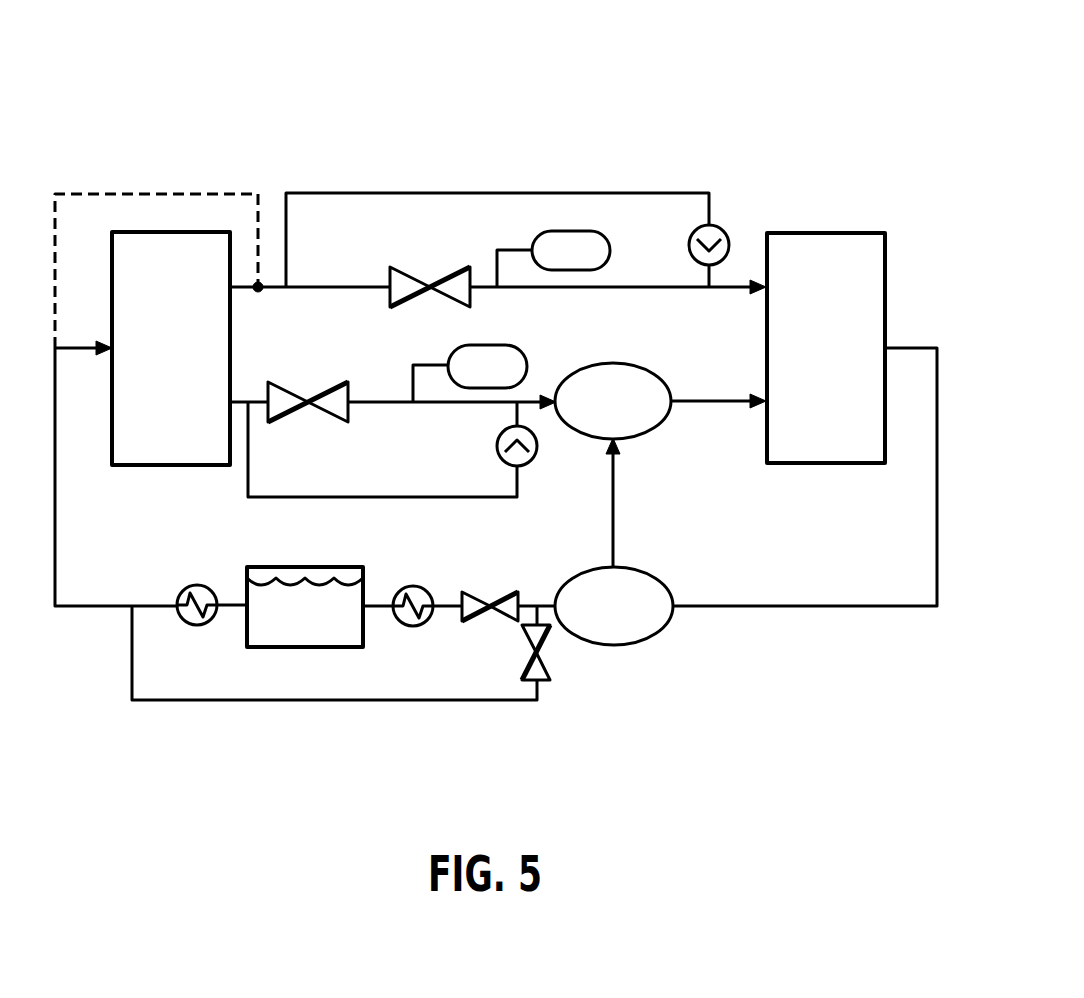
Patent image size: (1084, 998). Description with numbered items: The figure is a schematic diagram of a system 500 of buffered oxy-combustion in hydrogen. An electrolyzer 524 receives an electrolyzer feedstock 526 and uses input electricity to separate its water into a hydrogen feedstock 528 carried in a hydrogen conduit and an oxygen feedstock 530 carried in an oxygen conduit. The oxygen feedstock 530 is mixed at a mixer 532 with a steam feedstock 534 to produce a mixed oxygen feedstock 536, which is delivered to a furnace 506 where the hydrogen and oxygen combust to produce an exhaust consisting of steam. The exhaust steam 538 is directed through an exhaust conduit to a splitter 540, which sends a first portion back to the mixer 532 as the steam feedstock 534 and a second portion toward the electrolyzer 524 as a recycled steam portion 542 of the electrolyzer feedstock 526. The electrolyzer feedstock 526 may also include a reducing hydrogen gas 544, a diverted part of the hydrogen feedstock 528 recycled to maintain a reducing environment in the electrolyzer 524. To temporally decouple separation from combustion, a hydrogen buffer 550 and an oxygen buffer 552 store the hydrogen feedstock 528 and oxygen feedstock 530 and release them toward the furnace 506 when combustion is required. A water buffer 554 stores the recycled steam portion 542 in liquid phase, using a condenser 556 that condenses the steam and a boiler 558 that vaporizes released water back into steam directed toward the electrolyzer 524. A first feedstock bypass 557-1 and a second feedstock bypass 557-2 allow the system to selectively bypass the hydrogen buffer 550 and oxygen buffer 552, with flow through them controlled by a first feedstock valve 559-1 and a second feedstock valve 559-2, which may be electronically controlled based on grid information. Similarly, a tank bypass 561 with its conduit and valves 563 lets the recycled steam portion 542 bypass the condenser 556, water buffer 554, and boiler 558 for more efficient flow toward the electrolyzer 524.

The system 500 is at (848, 86).
The furnace 506 is at (826, 348).
The electrolyzer 524 is at (171, 348).
The electrolyzer feedstock 526 is at (84, 350).
The hydrogen feedstock 528 is at (330, 285).
The oxygen feedstock 530 is at (384, 400).
The mixer 532 is at (613, 401).
The steam feedstock 534 is at (617, 472).
The mixed oxygen feedstock 536 is at (718, 398).
The exhaust steam 538 is at (738, 608).
The splitter 540 is at (614, 606).
The recycled steam portion 542 is at (157, 610).
The reducing hydrogen gas 544 is at (160, 193).
The hydrogen buffer 550 is at (553, 259).
The oxygen buffer 552 is at (470, 373).
The water buffer 554 is at (305, 607).
The condenser 556 is at (413, 587).
The boiler 558 is at (197, 586).
The first feedstock valve 559-1 is at (428, 286).
The second feedstock valve 559-2 is at (310, 400).
The tank bypass 561 is at (332, 702).
The valves 563 is at (490, 593).
The first feedstock bypass 557-1 is at (487, 193).
The second feedstock bypass 557-2 is at (306, 496).